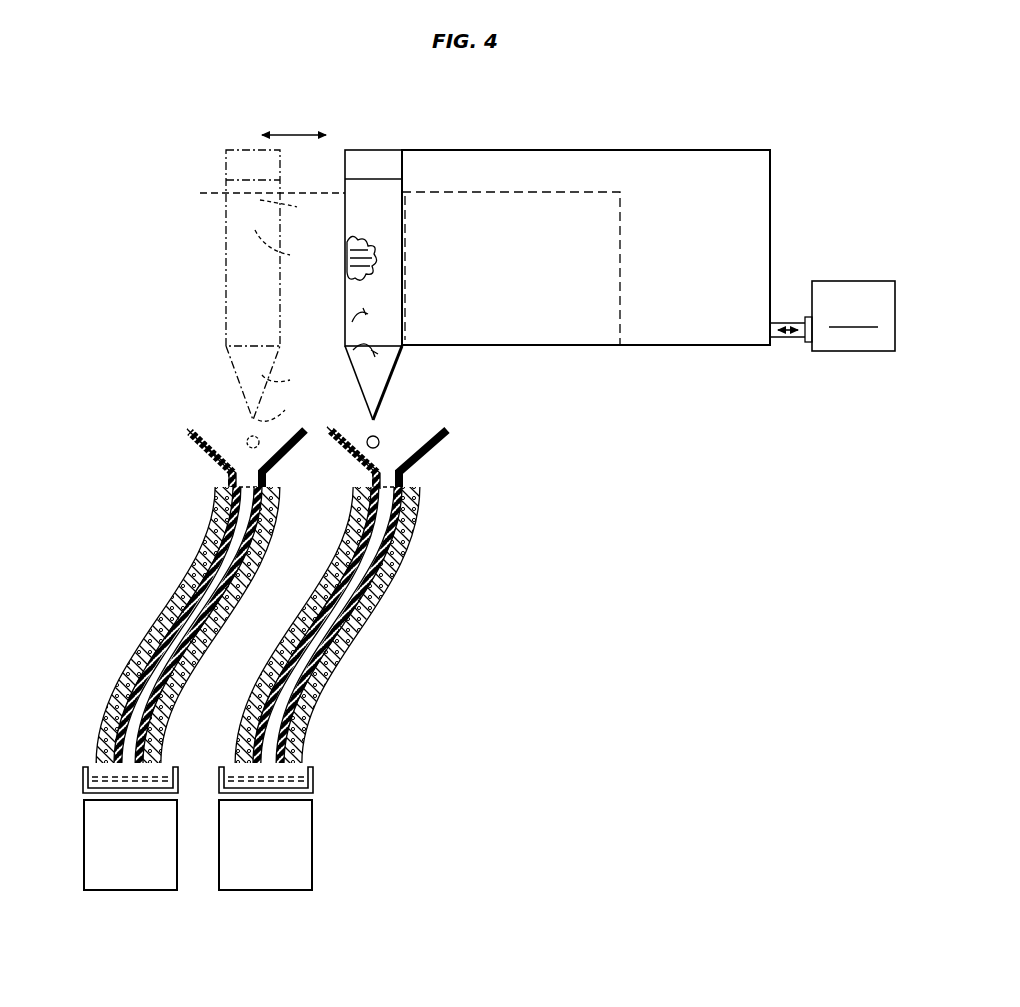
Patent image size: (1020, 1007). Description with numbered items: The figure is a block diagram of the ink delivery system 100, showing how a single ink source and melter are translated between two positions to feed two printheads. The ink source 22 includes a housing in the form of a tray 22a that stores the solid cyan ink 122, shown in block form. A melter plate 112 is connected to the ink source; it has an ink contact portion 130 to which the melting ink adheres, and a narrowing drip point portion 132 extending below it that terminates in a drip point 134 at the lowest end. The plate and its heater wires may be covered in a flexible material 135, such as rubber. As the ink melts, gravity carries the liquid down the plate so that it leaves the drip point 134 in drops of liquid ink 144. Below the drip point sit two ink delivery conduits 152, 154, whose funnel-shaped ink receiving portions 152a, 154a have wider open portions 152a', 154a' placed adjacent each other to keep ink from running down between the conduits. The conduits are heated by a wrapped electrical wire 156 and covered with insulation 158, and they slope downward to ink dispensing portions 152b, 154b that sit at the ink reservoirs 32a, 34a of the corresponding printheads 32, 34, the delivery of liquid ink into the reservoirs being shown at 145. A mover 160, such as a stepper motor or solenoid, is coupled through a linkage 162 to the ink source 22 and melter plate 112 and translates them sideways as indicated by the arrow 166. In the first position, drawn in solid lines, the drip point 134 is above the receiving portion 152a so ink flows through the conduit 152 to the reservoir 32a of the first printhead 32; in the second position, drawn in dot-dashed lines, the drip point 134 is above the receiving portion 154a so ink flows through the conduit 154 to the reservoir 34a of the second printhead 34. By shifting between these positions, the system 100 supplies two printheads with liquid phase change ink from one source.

The ink delivery system 100 is at (176, 124).
The ink source 22 is at (738, 150).
The tray 22a is at (771, 212).
The cyan solid ink 122 is at (226, 193).
The melter plate 112 is at (373, 170).
The ink contact portion 130 is at (347, 257).
The flexible material 135 is at (349, 330).
The drip point portion 132 is at (356, 376).
The drip point 134 is at (387, 418).
The drops of liquid ink 144 is at (368, 430).
The arrow 166 is at (286, 133).
The mover 160 is at (850, 316).
The linkage 162 is at (790, 340).
The ink receiving portion 154a is at (211, 459).
The open portion 154a' is at (178, 429).
The ink receiving portion 152a is at (426, 458).
The open portion 152a' is at (455, 435).
The ink delivery conduit 154 is at (182, 597).
The ink delivery conduit 152 is at (376, 618).
The insulation 158 is at (300, 566).
The electrical wire 156 is at (259, 592).
The ink dispensing portion 154b is at (84, 732).
The ink dispensing portion 152b is at (318, 742).
The delivery of liquid ink to reservoirs 145 is at (168, 782).
The ink reservoir 34a is at (88, 782).
The ink reservoir 32a is at (313, 782).
The printhead 34 is at (133, 888).
The printhead 32 is at (266, 888).